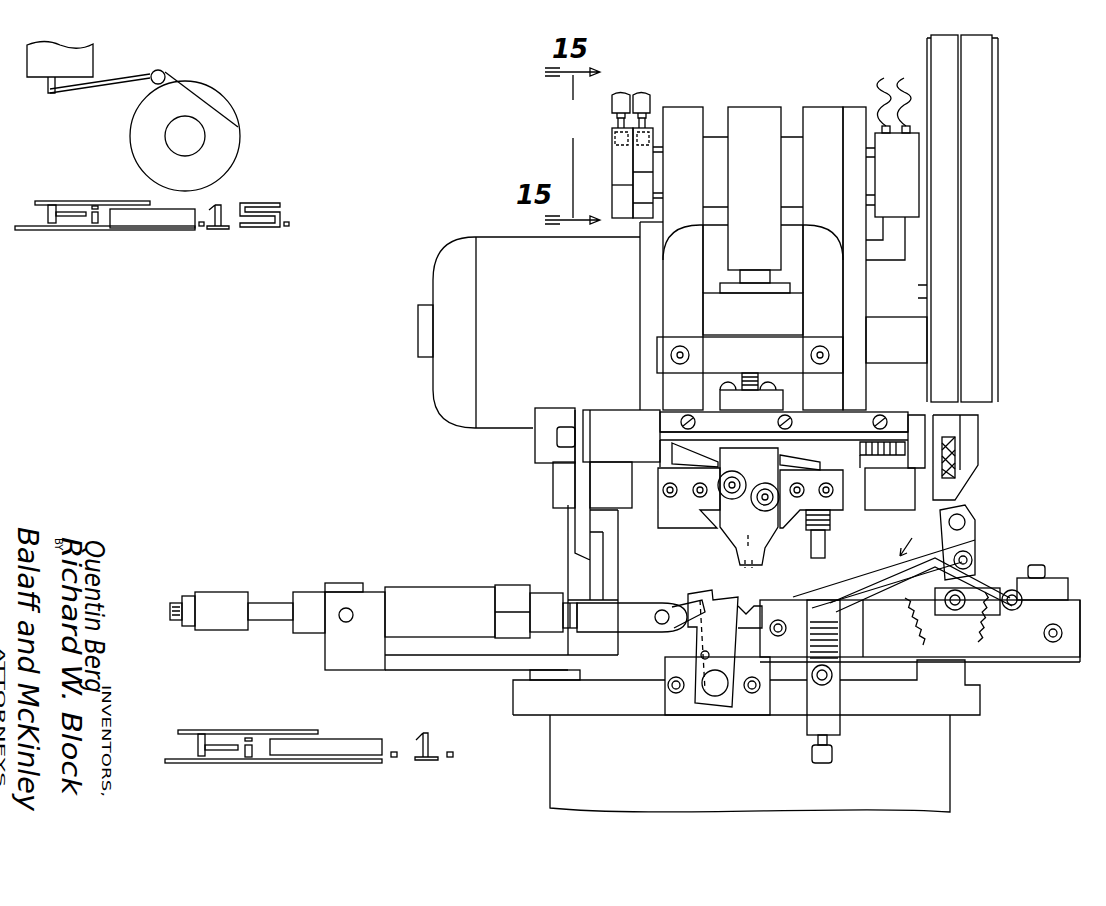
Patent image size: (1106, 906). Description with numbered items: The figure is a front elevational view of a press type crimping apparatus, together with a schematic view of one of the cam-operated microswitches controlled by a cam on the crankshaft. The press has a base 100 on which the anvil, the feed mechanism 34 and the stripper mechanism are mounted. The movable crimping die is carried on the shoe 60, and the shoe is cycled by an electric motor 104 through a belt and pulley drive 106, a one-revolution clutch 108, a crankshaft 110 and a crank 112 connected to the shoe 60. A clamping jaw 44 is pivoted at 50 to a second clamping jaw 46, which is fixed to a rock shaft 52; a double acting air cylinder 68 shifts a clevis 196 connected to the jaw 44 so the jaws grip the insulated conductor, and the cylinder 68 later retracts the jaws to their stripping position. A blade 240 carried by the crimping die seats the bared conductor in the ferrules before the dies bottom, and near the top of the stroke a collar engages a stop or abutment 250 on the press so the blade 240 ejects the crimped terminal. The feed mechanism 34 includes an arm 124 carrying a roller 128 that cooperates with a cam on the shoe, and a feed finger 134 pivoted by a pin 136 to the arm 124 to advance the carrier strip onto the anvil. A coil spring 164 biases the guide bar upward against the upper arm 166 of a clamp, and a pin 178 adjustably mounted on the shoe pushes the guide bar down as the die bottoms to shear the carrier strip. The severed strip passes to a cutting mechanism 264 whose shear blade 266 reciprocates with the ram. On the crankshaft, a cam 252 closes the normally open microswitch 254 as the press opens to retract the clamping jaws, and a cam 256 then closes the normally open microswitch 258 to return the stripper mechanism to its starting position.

In FIG. 15, the microswitch 254 is at (78, 55).
In FIG. 1, the microswitch 254 is at (612, 100).
In FIG. 1, the microswitch 258 is at (643, 93).
In FIG. 1, the cam 256 is at (648, 158).
In FIG. 15, the cam 252 is at (240, 130).
In FIG. 1, the cam 252 is at (622, 218).
In FIG. 1, the crank 112 is at (738, 106).
In FIG. 15, the crankshaft 110 is at (190, 125).
In FIG. 1, the crankshaft 110 is at (790, 145).
In FIG. 1, the one-revolution clutch 108 is at (912, 175).
In FIG. 1, the belt and pulley drive 106 is at (998, 240).
In FIG. 1, the electric motor 104 is at (580, 326).
In FIG. 1, the stop or abutment 250 is at (792, 340).
In FIG. 1, the shoe 60 is at (553, 452).
In FIG. 1, the shear blade 266 is at (585, 512).
In FIG. 1, the cutting mechanism 264 is at (556, 563).
In FIG. 1, the pin 178 is at (838, 528).
In FIG. 1, the blade 240 is at (715, 535).
In FIG. 1, the clamping jaw 44 is at (697, 590).
In FIG. 1, the clamping jaw 46 is at (735, 597).
In FIG. 1, the rock shaft 52 is at (715, 700).
In FIG. 1, the pivot 50 is at (690, 650).
In FIG. 1, the clevis 196 is at (640, 620).
In FIG. 1, the double acting air cylinder 68 is at (428, 592).
In FIG. 1, the base 100 is at (968, 702).
In FIG. 1, the coil spring 164 is at (808, 655).
In FIG. 1, the feed finger 134 is at (843, 578).
In FIG. 1, the arm 124 is at (975, 545).
In FIG. 1, the upper arm 166 is at (845, 592).
In FIG. 1, the roller 128 is at (975, 518).
In FIG. 1, the pin 136 is at (975, 560).
In FIG. 1, the feed mechanism 34 is at (910, 536).